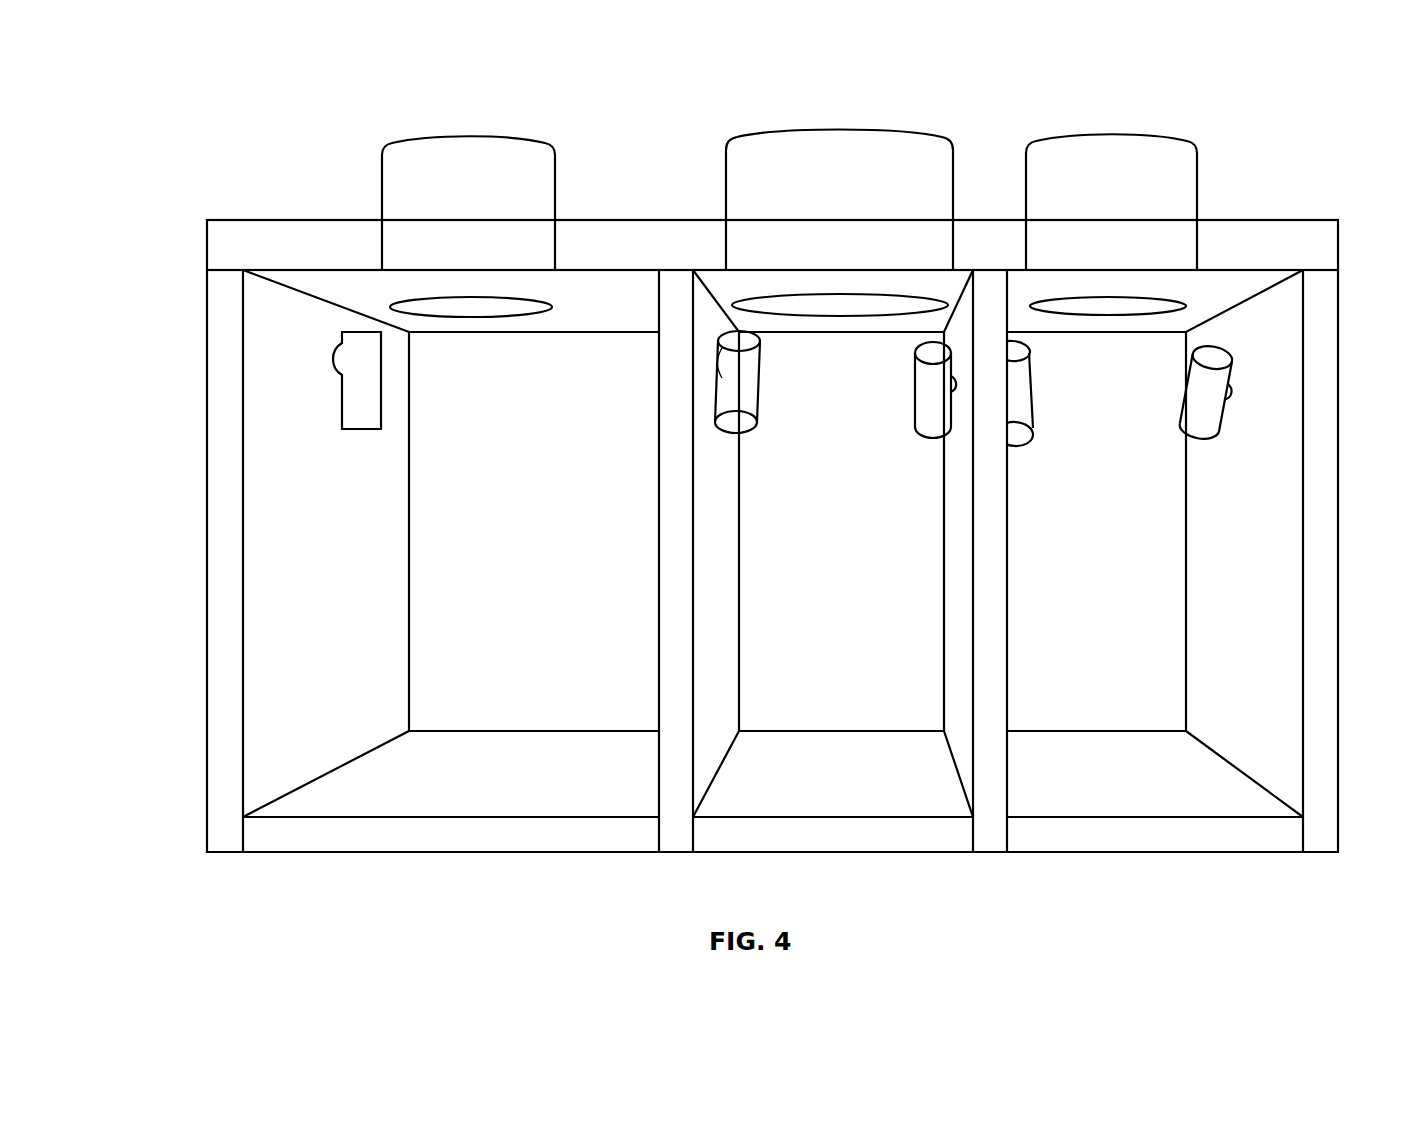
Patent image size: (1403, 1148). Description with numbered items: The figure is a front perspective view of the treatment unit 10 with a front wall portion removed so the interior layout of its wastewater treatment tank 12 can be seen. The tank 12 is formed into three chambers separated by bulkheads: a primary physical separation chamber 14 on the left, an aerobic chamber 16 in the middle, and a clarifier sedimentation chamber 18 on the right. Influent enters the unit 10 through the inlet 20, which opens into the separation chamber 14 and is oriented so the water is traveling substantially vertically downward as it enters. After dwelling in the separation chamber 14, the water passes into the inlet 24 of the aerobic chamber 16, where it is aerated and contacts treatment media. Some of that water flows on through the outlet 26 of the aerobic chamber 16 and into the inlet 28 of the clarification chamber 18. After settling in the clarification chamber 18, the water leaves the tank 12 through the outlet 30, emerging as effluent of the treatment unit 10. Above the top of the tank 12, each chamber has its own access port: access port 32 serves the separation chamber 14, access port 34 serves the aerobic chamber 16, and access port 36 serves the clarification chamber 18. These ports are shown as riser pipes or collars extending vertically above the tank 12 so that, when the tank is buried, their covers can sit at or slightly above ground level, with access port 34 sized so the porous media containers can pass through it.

The treatment unit 10 is at (1320, 138).
The wastewater treatment tank 12 is at (1328, 247).
The primary physical separation chamber 14 is at (270, 730).
The aerobic chamber 16 is at (913, 778).
The clarifier sedimentation chamber 18 is at (1258, 688).
The inlet 20 is at (357, 420).
The inlet of aerobic chamber 24 is at (752, 393).
The outlet of aerobic chamber 26 is at (920, 418).
The inlet of clarification chamber 28 is at (1020, 398).
The outlet 30 is at (1210, 418).
The access port 32 is at (395, 180).
The access port 34 is at (738, 178).
The access port 36 is at (1185, 178).